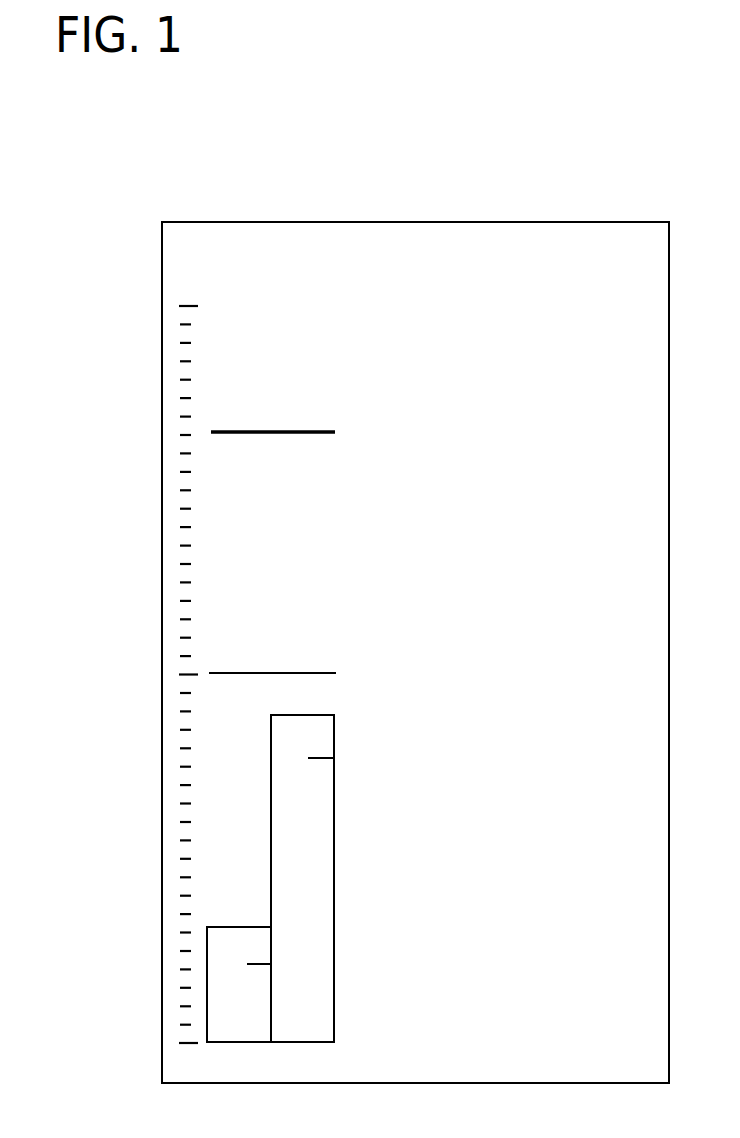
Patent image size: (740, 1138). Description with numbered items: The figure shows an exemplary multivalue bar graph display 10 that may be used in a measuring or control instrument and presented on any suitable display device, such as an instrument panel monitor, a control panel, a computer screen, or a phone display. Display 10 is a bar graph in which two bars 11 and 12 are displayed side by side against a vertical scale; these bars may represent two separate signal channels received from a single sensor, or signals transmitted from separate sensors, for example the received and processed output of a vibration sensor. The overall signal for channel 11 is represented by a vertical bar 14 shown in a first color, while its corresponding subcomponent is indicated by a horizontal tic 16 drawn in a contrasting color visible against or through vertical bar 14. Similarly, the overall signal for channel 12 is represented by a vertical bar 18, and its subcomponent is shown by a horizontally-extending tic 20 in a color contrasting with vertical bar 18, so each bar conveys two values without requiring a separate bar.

The display 10 is at (115, 197).
The bar 11 is at (207, 972).
The bar 12 is at (271, 783).
The vertical bar 14 is at (174, 984).
The horizontal tic 16 is at (257, 964).
The vertical bar 18 is at (203, 878).
The horizontally-extending tic 20 is at (318, 758).